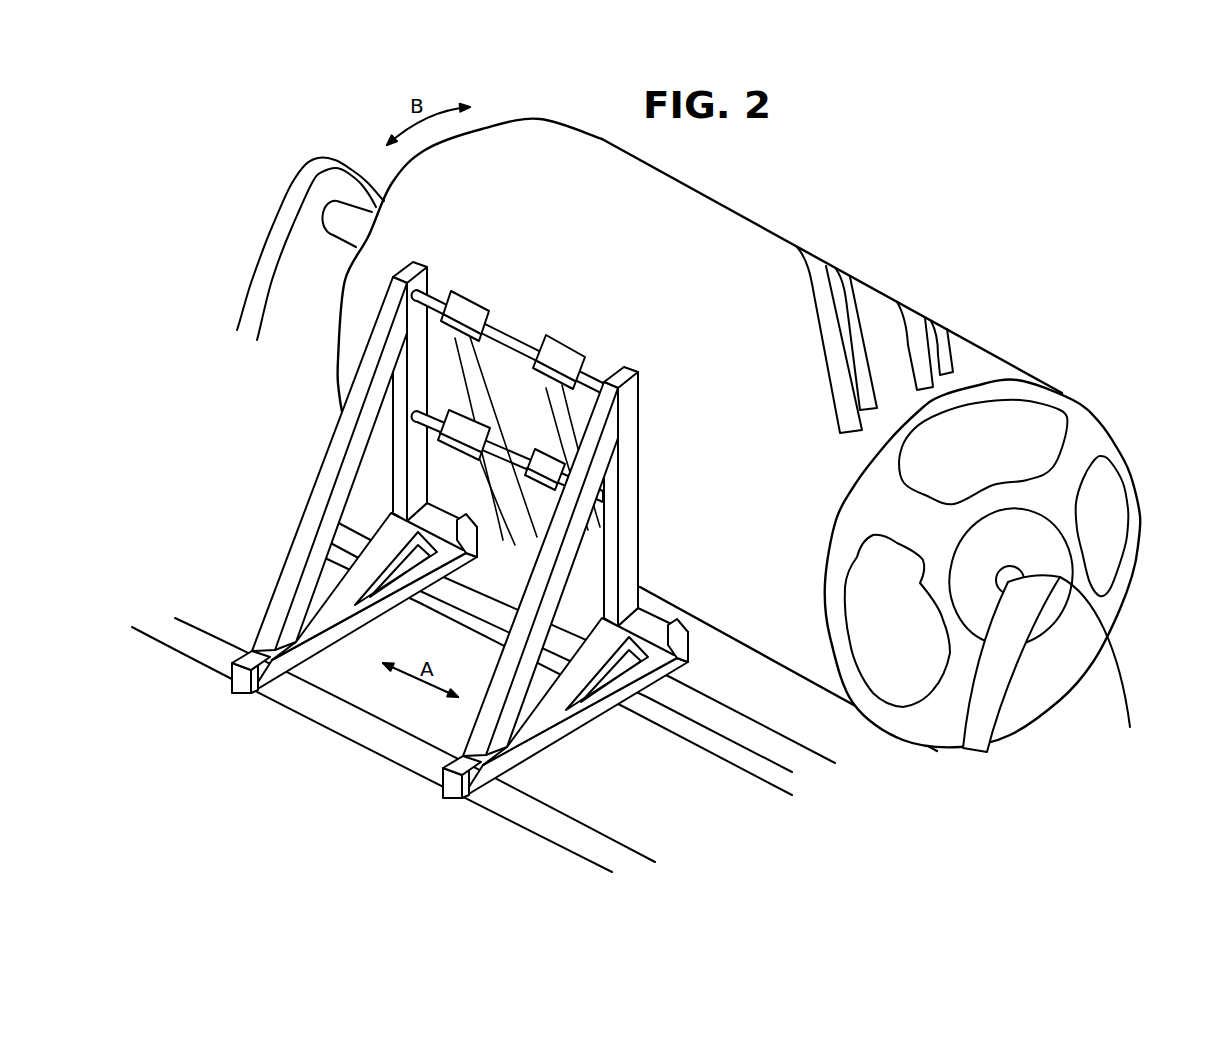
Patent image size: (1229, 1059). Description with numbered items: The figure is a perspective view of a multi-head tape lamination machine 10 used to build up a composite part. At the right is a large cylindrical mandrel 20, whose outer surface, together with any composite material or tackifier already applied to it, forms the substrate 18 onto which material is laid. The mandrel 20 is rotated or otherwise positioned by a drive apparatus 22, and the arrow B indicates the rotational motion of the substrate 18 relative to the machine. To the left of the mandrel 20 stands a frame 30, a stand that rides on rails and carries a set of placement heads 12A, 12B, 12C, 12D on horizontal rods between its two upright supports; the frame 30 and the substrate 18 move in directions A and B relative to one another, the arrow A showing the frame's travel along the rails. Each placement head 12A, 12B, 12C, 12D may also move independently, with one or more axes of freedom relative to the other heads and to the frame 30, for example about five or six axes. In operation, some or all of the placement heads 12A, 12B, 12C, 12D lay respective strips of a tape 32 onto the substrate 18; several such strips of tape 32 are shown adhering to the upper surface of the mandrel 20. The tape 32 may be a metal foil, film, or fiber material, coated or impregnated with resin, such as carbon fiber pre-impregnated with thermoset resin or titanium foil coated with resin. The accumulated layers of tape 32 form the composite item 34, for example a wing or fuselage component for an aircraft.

The multi-head tape lamination machine 10 is at (1040, 175).
The placement head 12A is at (466, 305).
The placement head 12B is at (565, 357).
The placement head 12C is at (458, 430).
The placement head 12D is at (546, 476).
The substrate 18 is at (712, 225).
The mandrel 20 is at (1093, 439).
The drive apparatus 22 is at (1083, 633).
The frame 30 is at (562, 725).
The tape 32 is at (915, 332).
The composite item 34 is at (906, 226).